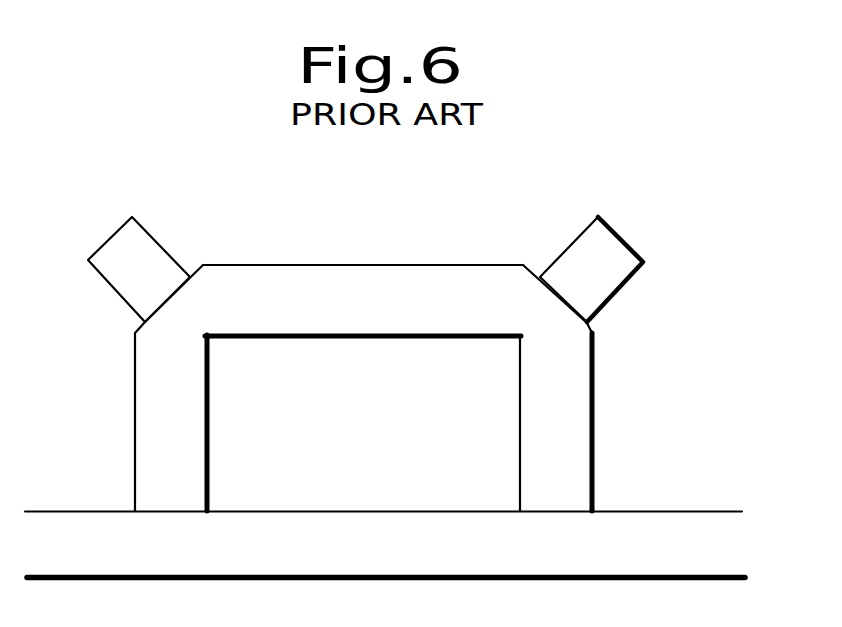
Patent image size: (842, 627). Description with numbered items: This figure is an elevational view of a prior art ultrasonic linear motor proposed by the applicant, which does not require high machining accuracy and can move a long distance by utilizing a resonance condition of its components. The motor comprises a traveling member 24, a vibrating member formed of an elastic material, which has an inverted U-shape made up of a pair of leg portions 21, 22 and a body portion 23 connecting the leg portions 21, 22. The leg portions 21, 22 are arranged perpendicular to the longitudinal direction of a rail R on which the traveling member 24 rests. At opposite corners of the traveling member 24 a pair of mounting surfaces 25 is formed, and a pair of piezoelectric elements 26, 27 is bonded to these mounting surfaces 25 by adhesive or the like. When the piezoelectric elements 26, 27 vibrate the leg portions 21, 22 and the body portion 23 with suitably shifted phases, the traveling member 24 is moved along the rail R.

The leg portion 21 is at (187, 468).
The leg portion 22 is at (570, 472).
The body portion 23 is at (342, 290).
The traveling member 24 is at (416, 262).
The mounting surface 25 is at (193, 272).
The piezoelectric element 26 is at (137, 258).
The piezoelectric element 27 is at (585, 260).
The rail R is at (681, 533).